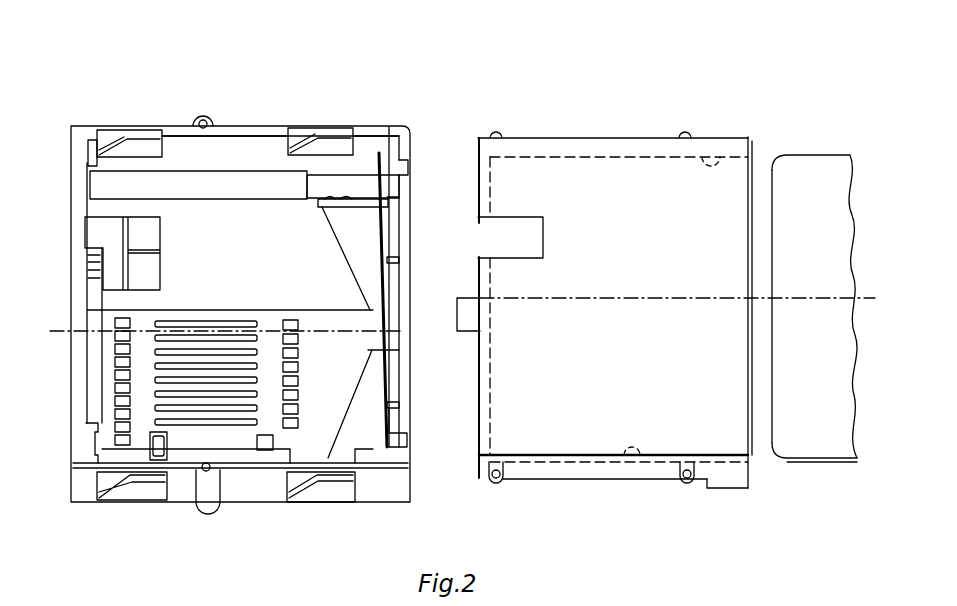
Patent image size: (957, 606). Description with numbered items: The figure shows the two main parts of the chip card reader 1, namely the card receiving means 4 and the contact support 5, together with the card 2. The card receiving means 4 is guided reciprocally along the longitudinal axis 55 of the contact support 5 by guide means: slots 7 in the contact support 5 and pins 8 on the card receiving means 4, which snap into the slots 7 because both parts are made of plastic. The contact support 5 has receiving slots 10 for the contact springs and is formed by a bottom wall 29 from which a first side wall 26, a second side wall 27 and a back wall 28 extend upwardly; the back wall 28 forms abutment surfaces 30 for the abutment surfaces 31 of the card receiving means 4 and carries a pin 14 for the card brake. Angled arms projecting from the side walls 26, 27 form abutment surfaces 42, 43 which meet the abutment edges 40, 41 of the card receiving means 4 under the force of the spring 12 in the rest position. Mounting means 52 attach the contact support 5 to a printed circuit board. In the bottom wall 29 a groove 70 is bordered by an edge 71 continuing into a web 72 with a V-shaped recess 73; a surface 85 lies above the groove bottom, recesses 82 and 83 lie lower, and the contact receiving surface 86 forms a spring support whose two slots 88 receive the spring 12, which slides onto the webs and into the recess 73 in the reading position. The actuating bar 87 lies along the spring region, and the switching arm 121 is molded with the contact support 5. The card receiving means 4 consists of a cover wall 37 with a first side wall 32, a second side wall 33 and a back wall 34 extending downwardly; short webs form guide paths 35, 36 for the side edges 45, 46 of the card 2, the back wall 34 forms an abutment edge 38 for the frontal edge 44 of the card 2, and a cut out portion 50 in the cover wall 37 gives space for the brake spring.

The electrical connector assembly 1 is at (448, 102).
The card 2 is at (816, 296).
The card receiving means 4 is at (649, 286).
The contact support 5 is at (172, 120).
The slots 7 is at (138, 142).
The pins 8 is at (495, 133).
The receiving slots 10 is at (233, 353).
The spring 12 is at (399, 287).
The pin 14 is at (80, 267).
The first side wall 26 is at (250, 153).
The second side wall 27 is at (258, 487).
The back wall 28 is at (82, 367).
The bottom wall 29 is at (337, 390).
The abutment surfaces 30 is at (92, 160).
The abutment surfaces 31 is at (477, 192).
The first side wall 32 is at (572, 135).
The second side wall 33 is at (583, 470).
The back wall 34 is at (462, 348).
The guide path 35 is at (722, 157).
The guide path 36 is at (640, 457).
The cover wall 37 is at (715, 427).
The abutment edge 38 is at (490, 335).
The abutment edge 40 is at (750, 147).
The abutment edge 41 is at (750, 468).
The abutment surface 42 is at (400, 147).
The abutment surface 43 is at (397, 443).
The abutment edge 44 is at (765, 362).
The side edge 45 is at (830, 153).
The side edge 46 is at (827, 462).
The cut out portion 50 is at (540, 240).
The mounting means 52 is at (207, 118).
The longitudinal axis 55 is at (580, 298).
The groove 70 is at (125, 185).
The edge 71 is at (192, 193).
The web 72 is at (322, 210).
The V-shaped recess 73 is at (340, 233).
The recess 82 is at (357, 238).
The recess 83 is at (363, 440).
The surface 85 is at (337, 278).
The contact receiving surface 86 is at (328, 415).
The actuating bar 87 is at (400, 331).
The slots 88 is at (402, 350).
The switching arm 121 is at (143, 448).